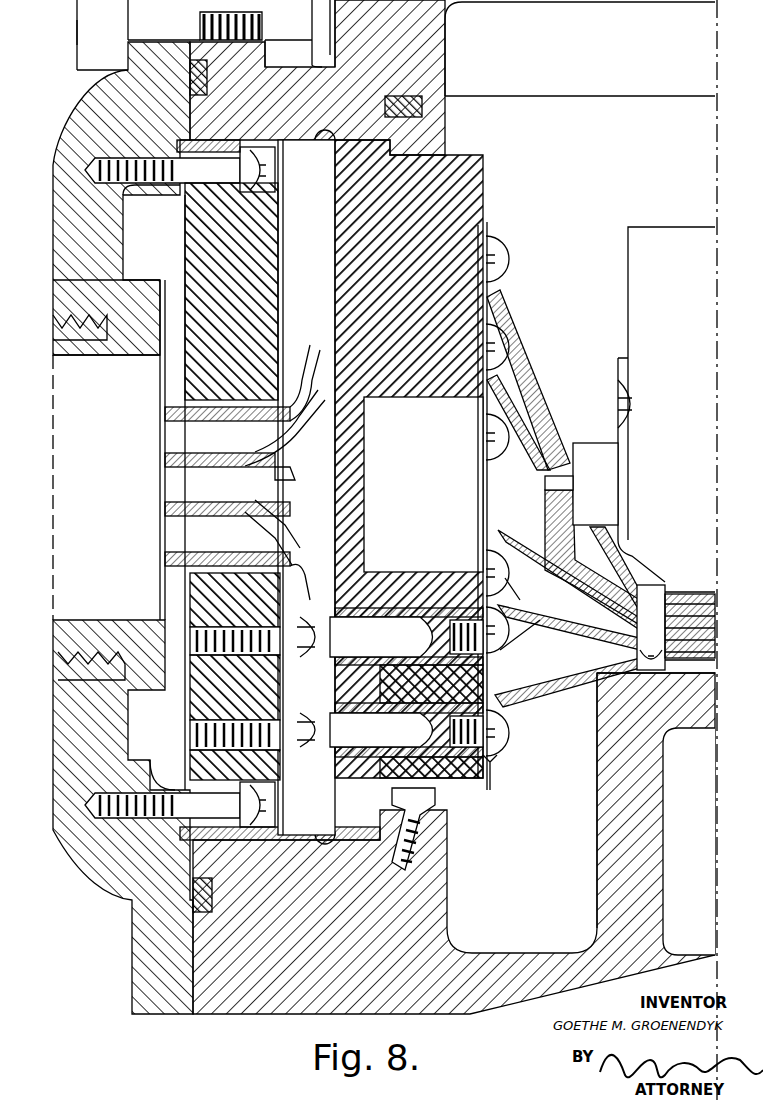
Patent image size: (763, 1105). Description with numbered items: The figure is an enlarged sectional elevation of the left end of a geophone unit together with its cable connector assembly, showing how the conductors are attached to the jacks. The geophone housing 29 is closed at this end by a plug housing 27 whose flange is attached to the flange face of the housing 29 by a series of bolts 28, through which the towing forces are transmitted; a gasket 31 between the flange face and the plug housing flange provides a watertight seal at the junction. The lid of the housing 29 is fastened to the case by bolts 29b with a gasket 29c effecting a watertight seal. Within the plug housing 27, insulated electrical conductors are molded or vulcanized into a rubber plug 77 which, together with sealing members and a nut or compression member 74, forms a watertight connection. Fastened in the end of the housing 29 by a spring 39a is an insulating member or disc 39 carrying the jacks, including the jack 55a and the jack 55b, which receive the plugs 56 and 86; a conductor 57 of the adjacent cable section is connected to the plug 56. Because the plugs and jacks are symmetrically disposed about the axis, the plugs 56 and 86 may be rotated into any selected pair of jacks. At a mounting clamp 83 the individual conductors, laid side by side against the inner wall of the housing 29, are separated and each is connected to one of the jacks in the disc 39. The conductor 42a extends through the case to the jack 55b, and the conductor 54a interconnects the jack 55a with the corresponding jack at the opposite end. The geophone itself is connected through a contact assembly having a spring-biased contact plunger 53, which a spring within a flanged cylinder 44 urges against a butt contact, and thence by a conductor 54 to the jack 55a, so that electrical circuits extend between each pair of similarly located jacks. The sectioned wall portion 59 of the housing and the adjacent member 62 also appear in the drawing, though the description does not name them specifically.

The plug housing 27 is at (110, 5).
The bolts 28 is at (206, 35).
The housing 29 is at (472, 997).
The bolts 29b is at (437, 57).
The gasket 29c is at (420, 108).
The gasket 31 is at (205, 912).
The insulating member or disc 39 is at (478, 170).
The spring 39a is at (330, 160).
The conductor 42a is at (515, 633).
The flanged cylinder 44 is at (605, 507).
The spring-biased contact plunger 53 is at (563, 486).
The conductor 54 is at (507, 648).
The conductor 54a is at (568, 675).
The jack 55a is at (483, 752).
The jack 55b is at (428, 610).
The plug 56 is at (390, 730).
The conductor 57 is at (178, 572).
The housing boss 59 is at (683, 722).
The cover 62 is at (684, 320).
The nut or compression member 74 is at (65, 350).
The plug 77 is at (105, 525).
The mounting clamp 83 is at (650, 597).
The plug 86 is at (390, 636).